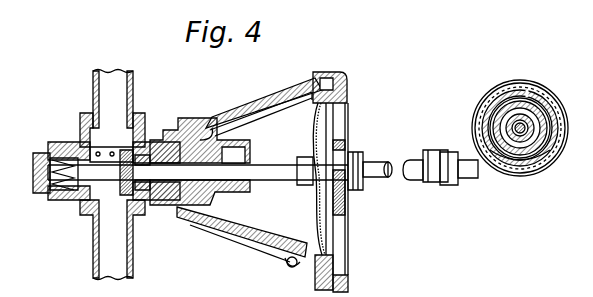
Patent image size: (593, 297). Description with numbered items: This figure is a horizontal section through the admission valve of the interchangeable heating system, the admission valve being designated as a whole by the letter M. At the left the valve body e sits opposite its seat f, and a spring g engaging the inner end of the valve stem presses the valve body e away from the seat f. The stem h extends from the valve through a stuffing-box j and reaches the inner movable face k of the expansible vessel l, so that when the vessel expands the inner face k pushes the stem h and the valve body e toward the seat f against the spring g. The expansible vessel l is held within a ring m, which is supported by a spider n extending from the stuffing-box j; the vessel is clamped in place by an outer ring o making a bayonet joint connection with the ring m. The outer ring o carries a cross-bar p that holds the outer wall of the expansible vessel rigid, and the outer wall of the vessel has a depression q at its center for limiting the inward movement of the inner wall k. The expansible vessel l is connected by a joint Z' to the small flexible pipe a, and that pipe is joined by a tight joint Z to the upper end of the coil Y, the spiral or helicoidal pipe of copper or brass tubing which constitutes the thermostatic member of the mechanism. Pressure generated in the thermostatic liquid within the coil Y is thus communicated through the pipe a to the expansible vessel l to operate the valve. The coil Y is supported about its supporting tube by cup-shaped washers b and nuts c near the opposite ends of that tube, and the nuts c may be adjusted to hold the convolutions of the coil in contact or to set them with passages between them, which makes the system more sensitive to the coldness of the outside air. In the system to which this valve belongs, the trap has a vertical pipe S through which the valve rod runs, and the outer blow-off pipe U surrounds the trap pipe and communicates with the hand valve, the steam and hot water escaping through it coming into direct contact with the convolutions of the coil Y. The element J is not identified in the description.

The seat f is at (95, 108).
The valve body e is at (147, 138).
The stuffing-box j is at (216, 130).
The spider n is at (250, 113).
The ring o is at (336, 82).
The ring m is at (340, 104).
The depression q is at (334, 162).
The joint Z' is at (370, 152).
The stem h is at (270, 172).
The inner movable face k is at (316, 216).
The expansible vessel l is at (334, 222).
The cross-bar p is at (340, 238).
The flexible pipe a is at (410, 178).
The tight joint Z is at (435, 179).
The spring g is at (76, 203).
The admission valve M is at (46, 200).
The wheel J is at (516, 121).
The vertical pipe S is at (527, 98).
The nut c is at (538, 97).
The cup-shaped washer b is at (539, 107).
The coil Y is at (468, 180).
The blow-off pipe U is at (528, 155).